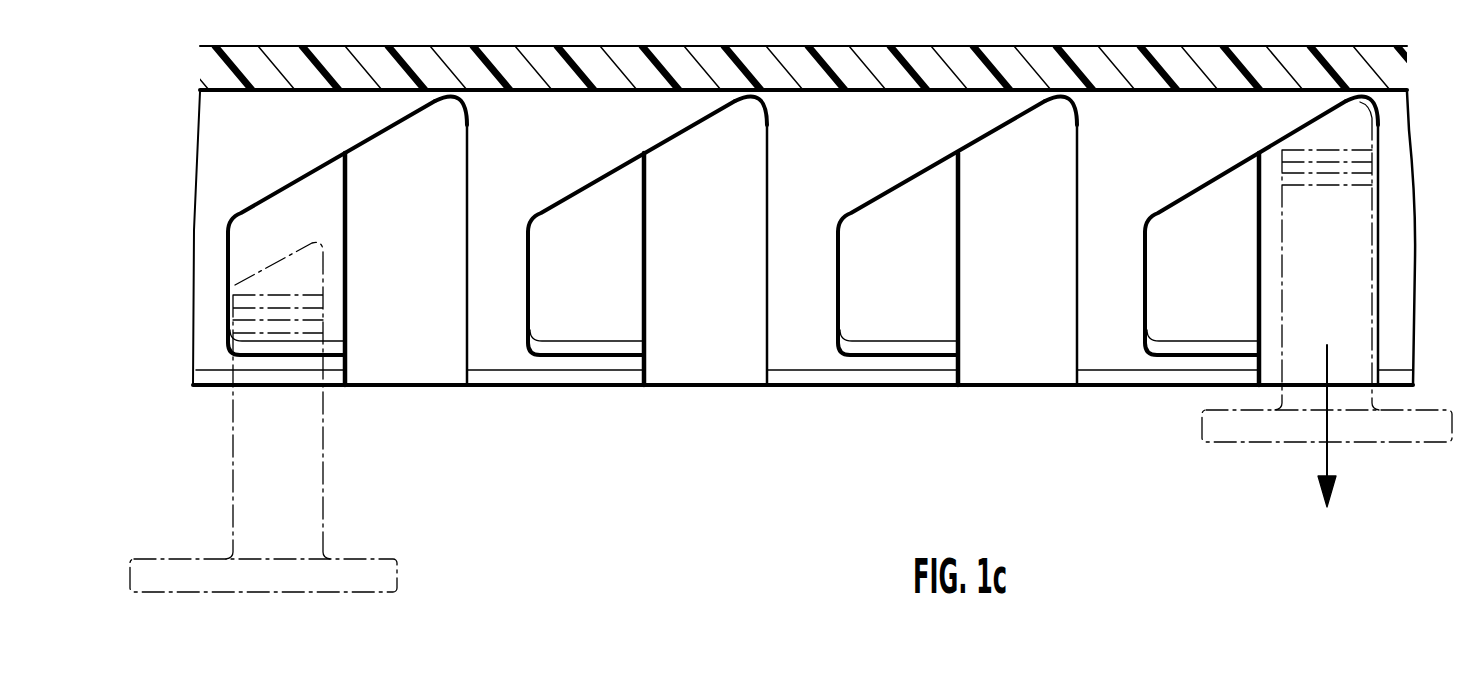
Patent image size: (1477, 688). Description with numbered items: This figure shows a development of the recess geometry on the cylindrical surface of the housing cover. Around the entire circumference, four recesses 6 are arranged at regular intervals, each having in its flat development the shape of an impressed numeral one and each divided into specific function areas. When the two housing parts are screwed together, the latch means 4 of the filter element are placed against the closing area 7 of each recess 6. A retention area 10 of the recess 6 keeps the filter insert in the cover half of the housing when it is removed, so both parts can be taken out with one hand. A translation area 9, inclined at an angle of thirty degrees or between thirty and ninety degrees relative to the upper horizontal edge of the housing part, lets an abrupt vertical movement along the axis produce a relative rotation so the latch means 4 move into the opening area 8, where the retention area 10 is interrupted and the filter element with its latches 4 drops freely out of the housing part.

The latch means 4 is at (300, 518).
The recess 6 is at (413, 277).
The closing area 7 is at (465, 216).
The opening area 8 is at (410, 368).
The translation area 9 is at (325, 173).
The retention area 10 is at (277, 365).